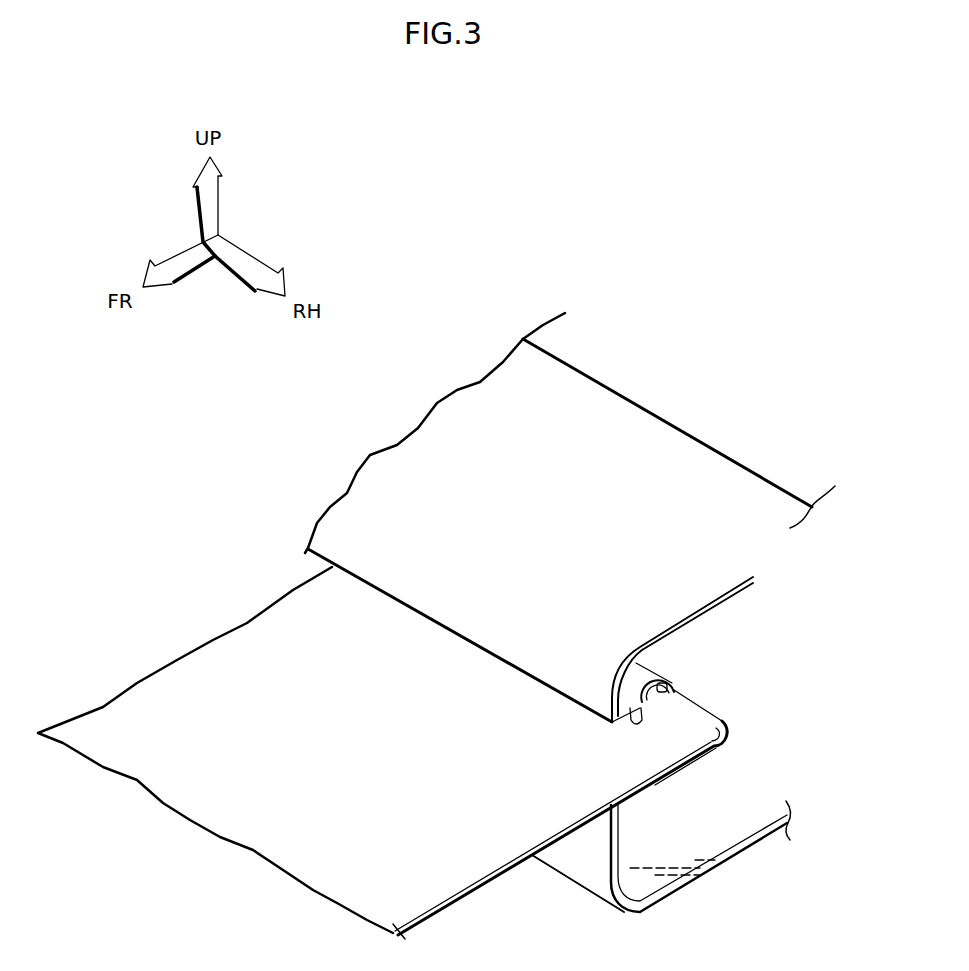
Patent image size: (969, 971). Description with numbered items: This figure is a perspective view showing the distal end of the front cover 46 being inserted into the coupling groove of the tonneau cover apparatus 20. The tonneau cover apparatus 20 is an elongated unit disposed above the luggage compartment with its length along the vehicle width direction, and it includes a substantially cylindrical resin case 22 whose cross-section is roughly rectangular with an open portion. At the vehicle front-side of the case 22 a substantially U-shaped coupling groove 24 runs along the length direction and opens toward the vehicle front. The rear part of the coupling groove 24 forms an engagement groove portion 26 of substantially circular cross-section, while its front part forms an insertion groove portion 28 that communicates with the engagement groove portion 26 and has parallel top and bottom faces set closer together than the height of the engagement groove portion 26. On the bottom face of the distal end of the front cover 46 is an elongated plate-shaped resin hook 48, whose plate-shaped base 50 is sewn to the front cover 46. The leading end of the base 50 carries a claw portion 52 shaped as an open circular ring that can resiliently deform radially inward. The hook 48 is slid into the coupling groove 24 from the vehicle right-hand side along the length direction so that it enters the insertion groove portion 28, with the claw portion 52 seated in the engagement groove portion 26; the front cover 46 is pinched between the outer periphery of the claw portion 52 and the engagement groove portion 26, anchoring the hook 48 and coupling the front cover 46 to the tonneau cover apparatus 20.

The tonneau cover apparatus 20 is at (723, 336).
The case 22 is at (727, 459).
The coupling groove 24 is at (616, 730).
The engagement groove portion 26 is at (671, 682).
The insertion groove portion 28 is at (632, 704).
The front cover 46 is at (481, 883).
The hook 48 is at (731, 747).
The base 50 is at (688, 768).
The claw portion 52 is at (723, 735).